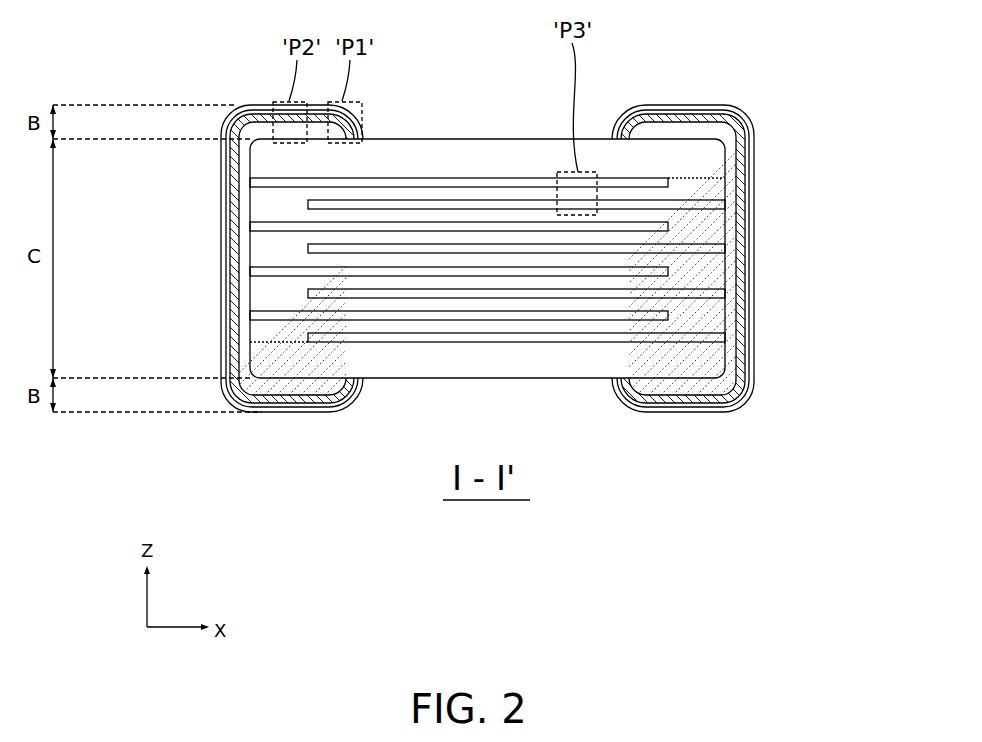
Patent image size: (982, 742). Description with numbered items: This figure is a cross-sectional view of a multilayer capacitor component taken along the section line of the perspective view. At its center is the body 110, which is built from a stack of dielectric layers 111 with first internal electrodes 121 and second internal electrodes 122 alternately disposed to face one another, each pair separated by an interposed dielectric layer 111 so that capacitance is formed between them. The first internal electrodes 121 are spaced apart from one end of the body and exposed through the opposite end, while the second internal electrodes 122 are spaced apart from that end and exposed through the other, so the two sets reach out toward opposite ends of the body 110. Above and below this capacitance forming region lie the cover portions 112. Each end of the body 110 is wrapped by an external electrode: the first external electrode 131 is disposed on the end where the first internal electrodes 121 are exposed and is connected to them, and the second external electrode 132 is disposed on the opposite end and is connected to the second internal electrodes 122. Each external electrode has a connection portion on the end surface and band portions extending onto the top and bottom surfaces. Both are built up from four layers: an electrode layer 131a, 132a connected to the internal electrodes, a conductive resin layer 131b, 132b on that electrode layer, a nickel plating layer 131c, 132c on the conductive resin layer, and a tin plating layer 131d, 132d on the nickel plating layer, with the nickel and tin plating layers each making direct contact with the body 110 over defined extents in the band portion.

The body 110 is at (420, 138).
The dielectric layer 111 is at (372, 220).
The cover portion 112 is at (470, 150).
The first internal electrode 121 is at (535, 184).
The second internal electrode 122 is at (611, 206).
The first external electrode 131 is at (385, 258).
The electrode layer 131a is at (240, 285).
The conductive resin layer 131b is at (240, 305).
The nickel plating layer 131c is at (240, 330).
The tin plating layer 131d is at (240, 357).
The second external electrode 132 is at (643, 258).
The electrode layer 132a is at (755, 252).
The conductive resin layer 132b is at (755, 278).
The nickel plating layer 132c is at (755, 305).
The tin plating layer 132d is at (755, 335).